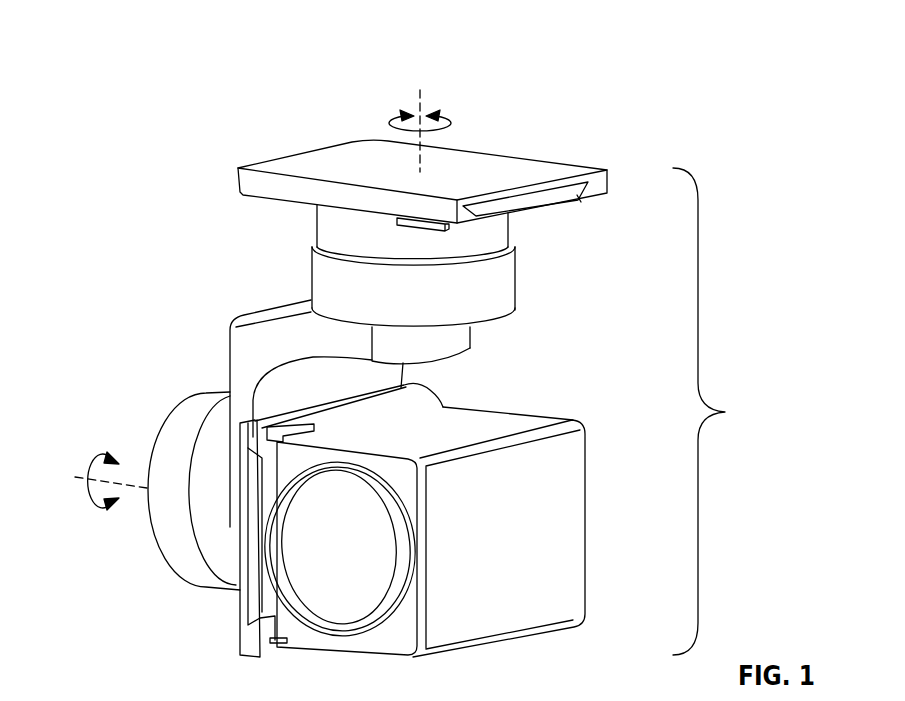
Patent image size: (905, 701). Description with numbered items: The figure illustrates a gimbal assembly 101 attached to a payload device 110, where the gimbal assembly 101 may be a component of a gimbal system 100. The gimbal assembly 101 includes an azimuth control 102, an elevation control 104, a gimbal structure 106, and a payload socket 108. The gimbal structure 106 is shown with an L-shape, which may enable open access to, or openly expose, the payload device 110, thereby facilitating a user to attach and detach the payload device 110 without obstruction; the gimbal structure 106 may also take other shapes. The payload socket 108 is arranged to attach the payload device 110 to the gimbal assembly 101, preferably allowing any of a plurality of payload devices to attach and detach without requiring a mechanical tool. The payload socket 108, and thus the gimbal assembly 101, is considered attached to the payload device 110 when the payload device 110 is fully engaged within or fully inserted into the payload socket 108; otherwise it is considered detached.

The gimbal system 100 is at (131, 137).
The gimbal assembly 101 is at (725, 411).
The azimuth control 102 is at (507, 284).
The elevation control 104 is at (148, 525).
The gimbal structure 106 is at (465, 340).
The payload socket 108 is at (240, 630).
The payload device 110 is at (573, 582).